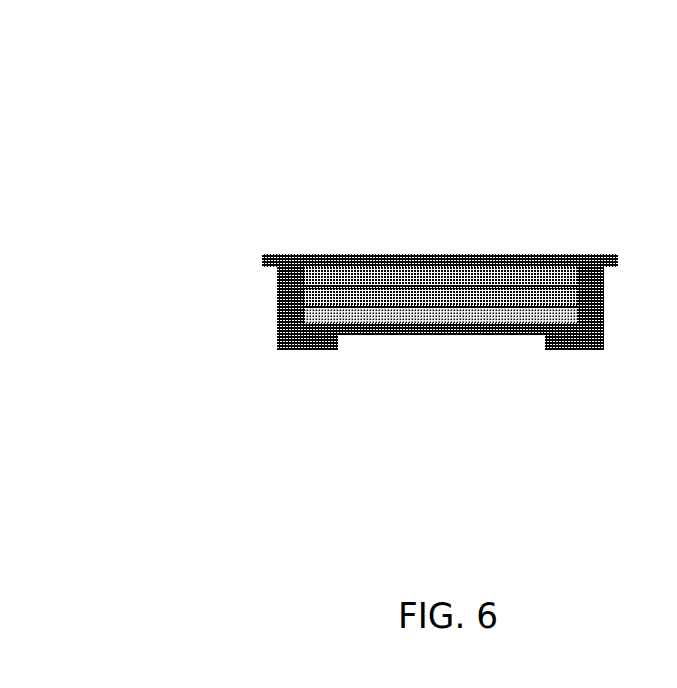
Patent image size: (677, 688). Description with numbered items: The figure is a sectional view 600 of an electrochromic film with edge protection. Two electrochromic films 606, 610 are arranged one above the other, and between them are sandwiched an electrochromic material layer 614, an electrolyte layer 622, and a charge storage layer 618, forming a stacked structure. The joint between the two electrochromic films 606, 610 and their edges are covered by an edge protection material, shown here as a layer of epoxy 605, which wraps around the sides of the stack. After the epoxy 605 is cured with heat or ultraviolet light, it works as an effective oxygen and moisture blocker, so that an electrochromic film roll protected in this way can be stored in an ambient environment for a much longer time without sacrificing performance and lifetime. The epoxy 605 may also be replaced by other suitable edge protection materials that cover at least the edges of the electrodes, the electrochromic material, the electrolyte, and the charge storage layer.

The sectional view 600 is at (190, 60).
The layer of epoxy 605 is at (292, 330).
The electrochromic film 606 is at (327, 255).
The electrochromic film 610 is at (367, 332).
The electrochromic material layer 614 is at (385, 278).
The charge storage layer 618 is at (483, 320).
The electrolyte layer 622 is at (432, 298).